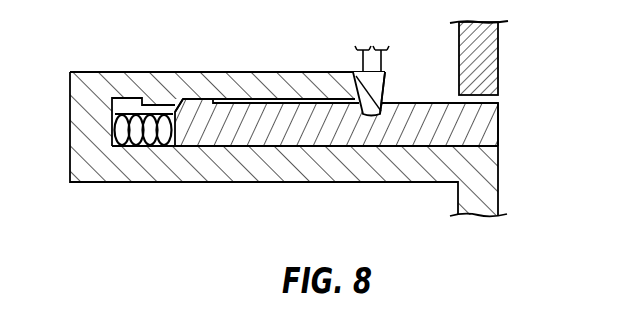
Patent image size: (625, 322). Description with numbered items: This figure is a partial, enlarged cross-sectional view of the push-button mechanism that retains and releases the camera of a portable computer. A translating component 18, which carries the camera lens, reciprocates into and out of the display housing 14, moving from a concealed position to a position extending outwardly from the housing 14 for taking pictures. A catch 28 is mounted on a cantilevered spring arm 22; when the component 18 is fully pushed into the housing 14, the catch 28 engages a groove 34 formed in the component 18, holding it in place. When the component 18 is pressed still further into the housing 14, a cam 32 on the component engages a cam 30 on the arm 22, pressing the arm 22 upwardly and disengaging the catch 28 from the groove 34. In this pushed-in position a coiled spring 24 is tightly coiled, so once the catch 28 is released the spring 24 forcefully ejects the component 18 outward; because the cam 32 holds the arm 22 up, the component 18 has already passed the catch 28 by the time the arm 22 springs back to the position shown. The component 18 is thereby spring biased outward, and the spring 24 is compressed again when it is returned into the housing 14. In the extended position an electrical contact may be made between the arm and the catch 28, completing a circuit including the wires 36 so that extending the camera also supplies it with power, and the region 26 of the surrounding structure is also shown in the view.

The display housing 14 is at (502, 43).
The translating component 18 is at (500, 117).
The cantilevered spring arm 22 is at (273, 73).
The coiled spring 24 is at (92, 173).
The lower body portion 26 is at (273, 173).
The catch 28 is at (386, 74).
The cam 30 is at (157, 101).
The cam 32 is at (182, 107).
The groove 34 is at (369, 116).
The wires 36 is at (377, 45).